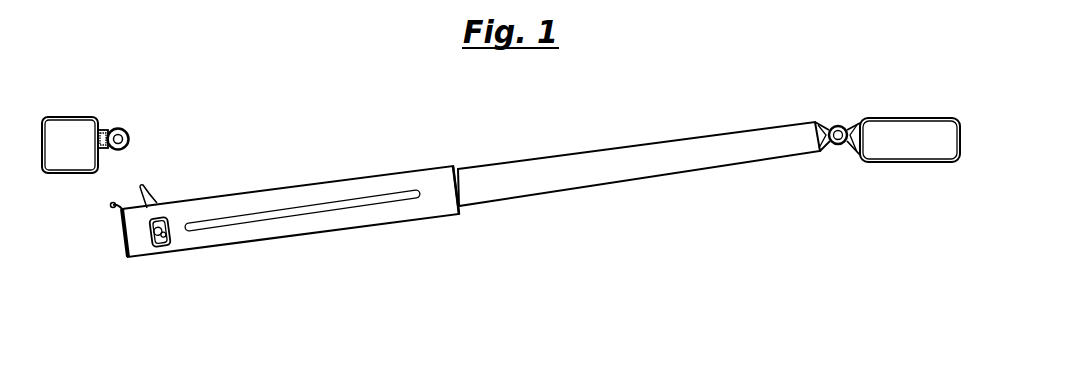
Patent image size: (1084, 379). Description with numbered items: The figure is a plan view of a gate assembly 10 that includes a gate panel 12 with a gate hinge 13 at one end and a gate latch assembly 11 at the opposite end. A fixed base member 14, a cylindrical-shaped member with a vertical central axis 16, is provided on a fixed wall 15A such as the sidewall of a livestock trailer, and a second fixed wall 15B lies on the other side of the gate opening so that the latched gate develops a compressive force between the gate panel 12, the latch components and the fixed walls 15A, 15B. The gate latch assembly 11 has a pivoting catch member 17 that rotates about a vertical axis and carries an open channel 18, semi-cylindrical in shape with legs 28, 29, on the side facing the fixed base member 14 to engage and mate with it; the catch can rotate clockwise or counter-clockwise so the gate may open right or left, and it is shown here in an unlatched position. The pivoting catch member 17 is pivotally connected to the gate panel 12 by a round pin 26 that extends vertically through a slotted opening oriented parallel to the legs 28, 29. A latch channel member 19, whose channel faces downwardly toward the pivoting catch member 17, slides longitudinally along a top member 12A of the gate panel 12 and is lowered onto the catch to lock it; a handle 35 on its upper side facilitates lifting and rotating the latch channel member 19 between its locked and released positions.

The gate assembly 10 is at (530, 212).
The gate latch assembly 11 is at (110, 265).
The gate panel 12 is at (508, 177).
The top member 12A is at (670, 153).
The gate hinge 13 is at (838, 126).
The fixed base member 14 is at (123, 128).
The fixed wall 15A is at (67, 129).
The fixed wall 15B is at (883, 163).
The vertical central axis 16 is at (130, 133).
The pivoting catch member 17 is at (153, 199).
The open channel 18 is at (128, 200).
The latch channel member 19 is at (357, 188).
The round pin 26 is at (160, 248).
The leg 28 is at (112, 208).
The leg 29 is at (141, 186).
The handle 35 is at (288, 217).